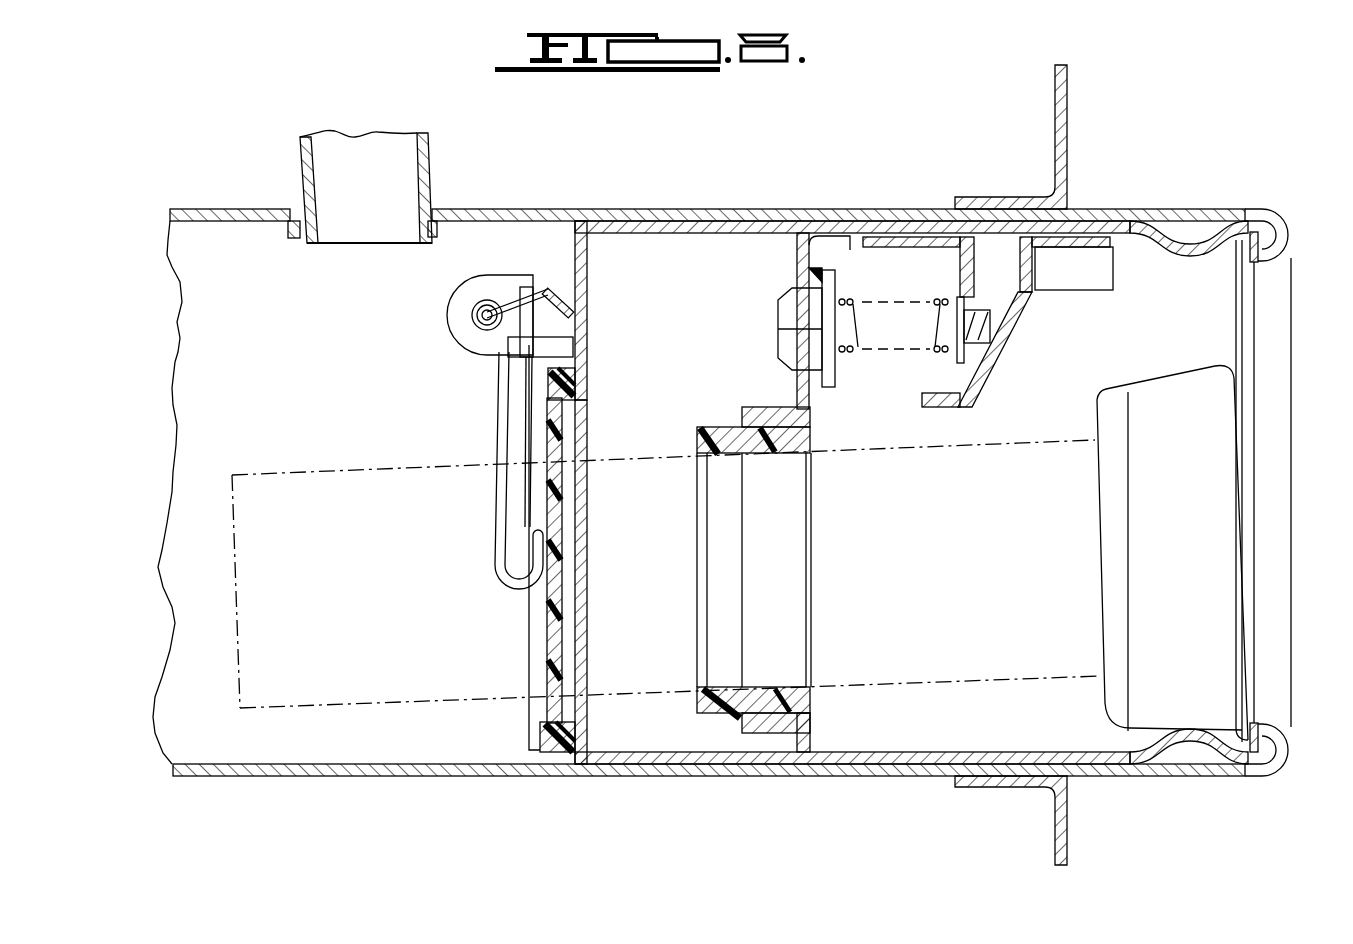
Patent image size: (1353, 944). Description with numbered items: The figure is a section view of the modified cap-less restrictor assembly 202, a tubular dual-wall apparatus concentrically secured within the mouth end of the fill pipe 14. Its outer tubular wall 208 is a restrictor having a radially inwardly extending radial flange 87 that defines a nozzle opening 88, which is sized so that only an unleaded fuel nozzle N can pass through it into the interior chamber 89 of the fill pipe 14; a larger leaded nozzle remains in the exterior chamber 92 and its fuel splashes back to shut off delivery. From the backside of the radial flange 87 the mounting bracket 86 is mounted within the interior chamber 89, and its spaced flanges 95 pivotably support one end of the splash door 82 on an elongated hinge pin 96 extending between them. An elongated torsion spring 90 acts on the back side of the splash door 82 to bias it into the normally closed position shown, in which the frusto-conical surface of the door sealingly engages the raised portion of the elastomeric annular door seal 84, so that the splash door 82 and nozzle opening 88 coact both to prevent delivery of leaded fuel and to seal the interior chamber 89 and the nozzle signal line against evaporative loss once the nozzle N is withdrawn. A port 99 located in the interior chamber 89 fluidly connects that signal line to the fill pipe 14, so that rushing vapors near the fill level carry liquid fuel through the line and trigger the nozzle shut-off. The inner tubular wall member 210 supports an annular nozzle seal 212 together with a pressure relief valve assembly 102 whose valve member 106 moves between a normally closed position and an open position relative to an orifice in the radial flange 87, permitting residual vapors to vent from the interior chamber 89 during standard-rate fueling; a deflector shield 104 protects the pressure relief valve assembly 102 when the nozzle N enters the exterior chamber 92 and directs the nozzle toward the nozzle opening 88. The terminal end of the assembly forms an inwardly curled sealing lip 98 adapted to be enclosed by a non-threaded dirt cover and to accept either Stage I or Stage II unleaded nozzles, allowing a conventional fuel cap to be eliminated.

The fill pipe 14 is at (330, 776).
The splash door 82 is at (527, 658).
The annular door seal 84 is at (560, 755).
The mounting bracket 86 is at (496, 268).
The radial flange 87 is at (588, 338).
The nozzle opening 88 is at (588, 428).
The interior chamber 89 is at (323, 326).
The torsion spring 90 is at (505, 585).
The exterior chamber 92 is at (893, 408).
The spaced flanges 95 is at (548, 280).
The hinge pin 96 is at (480, 321).
The inwardly curled sealing lip 98 is at (1272, 289).
The port 99 is at (408, 165).
The pressure relief valve assembly 102 is at (936, 274).
The deflector shield 104 is at (992, 372).
The valve member 106 is at (839, 284).
The modified cap-less restrictor assembly 202 is at (888, 136).
The outer tubular wall 208 is at (703, 228).
The inner tubular wall member 210 is at (870, 748).
The annular nozzle seal 212 is at (708, 712).
The fuel nozzle N is at (970, 442).